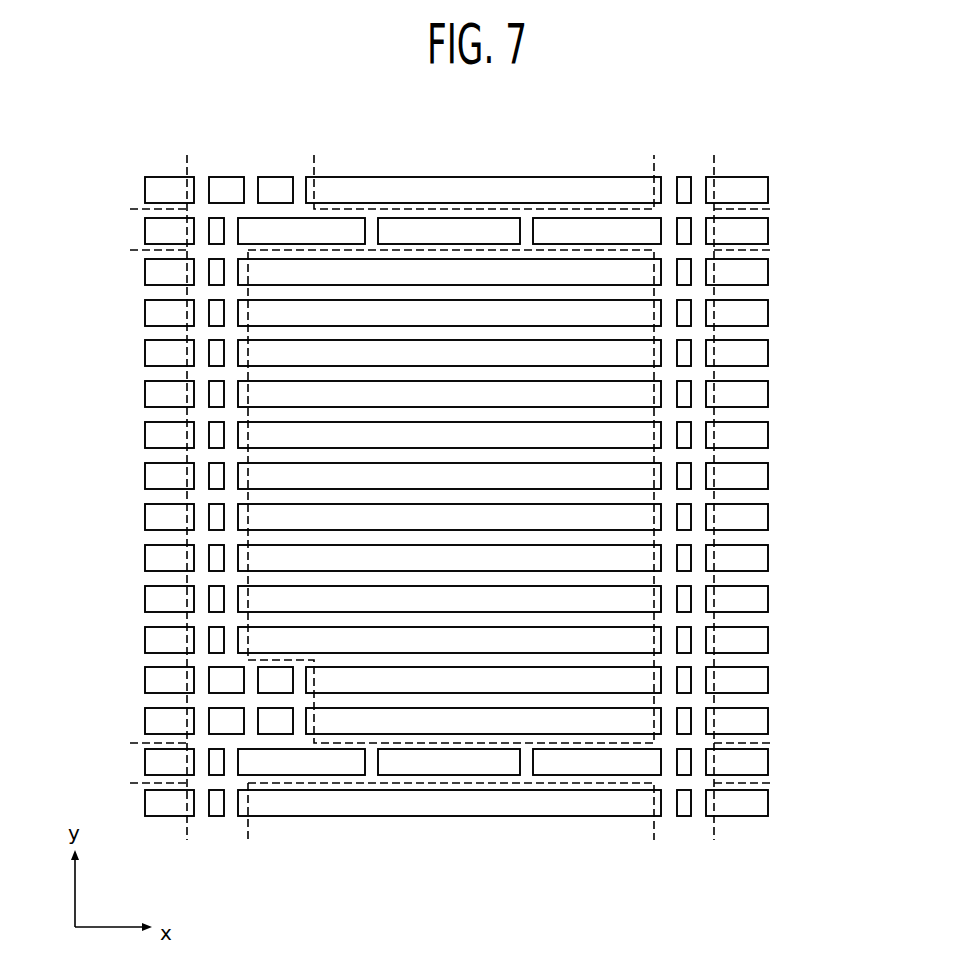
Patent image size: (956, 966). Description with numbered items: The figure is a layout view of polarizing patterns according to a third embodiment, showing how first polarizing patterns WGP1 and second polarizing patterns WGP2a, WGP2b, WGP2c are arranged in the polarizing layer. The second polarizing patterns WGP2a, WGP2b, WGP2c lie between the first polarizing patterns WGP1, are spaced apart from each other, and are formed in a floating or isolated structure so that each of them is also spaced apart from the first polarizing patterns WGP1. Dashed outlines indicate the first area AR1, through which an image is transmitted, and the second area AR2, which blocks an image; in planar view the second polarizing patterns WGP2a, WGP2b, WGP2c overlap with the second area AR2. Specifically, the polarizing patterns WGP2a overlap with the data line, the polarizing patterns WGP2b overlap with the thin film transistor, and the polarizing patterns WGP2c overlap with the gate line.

The first area AR1 is at (656, 373).
The second area AR2 is at (703, 332).
The first polarizing patterns WGP1 is at (243, 599).
The second polarizing patterns WGP2a is at (211, 640).
The second polarizing patterns WGP2b is at (275, 735).
The second polarizing patterns WGP2c is at (440, 775).